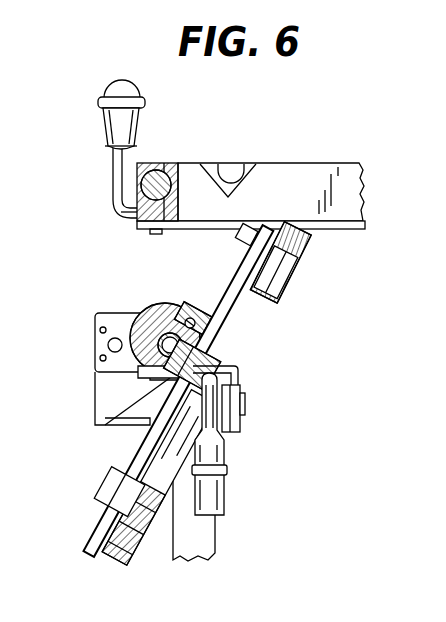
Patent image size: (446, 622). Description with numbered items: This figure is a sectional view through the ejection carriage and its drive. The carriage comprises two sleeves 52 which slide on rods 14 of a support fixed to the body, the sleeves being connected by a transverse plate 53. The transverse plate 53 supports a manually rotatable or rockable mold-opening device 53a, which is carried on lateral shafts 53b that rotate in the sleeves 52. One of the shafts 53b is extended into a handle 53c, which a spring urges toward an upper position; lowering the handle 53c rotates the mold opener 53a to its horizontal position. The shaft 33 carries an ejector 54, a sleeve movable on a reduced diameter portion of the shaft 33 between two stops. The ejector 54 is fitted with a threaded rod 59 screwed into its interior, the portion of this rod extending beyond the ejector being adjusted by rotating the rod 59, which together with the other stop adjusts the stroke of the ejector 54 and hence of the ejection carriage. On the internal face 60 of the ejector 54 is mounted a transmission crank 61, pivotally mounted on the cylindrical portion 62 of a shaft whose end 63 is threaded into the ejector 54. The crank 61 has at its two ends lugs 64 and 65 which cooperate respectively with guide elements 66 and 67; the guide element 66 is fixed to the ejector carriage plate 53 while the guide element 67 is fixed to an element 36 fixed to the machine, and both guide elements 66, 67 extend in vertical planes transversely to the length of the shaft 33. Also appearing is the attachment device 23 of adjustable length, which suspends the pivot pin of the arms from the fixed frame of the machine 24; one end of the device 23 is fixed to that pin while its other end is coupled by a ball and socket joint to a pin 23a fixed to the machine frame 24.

The rods 14 is at (163, 162).
The sleeves 52 is at (170, 176).
The transverse plate 53 is at (147, 229).
The mold-opening device 53a is at (280, 188).
The lateral shafts 53b is at (131, 218).
The handle 53c is at (113, 172).
The ejector 54 is at (152, 318).
The threaded rod 59 is at (190, 317).
The internal face 60 is at (222, 343).
The transmission crank 61 is at (241, 292).
The cylindrical portion 62 is at (240, 365).
The lug 64 is at (283, 279).
The guide element 66 is at (300, 250).
The attachment device 23 is at (246, 400).
The pin 23a is at (247, 410).
The fixed frame of the machine 24 is at (233, 440).
The shaft 33 is at (145, 372).
The end of shaft 63 is at (110, 425).
The lug 65 is at (105, 515).
The element fixed to the machine 36 is at (128, 560).
The guide element 67 is at (150, 540).